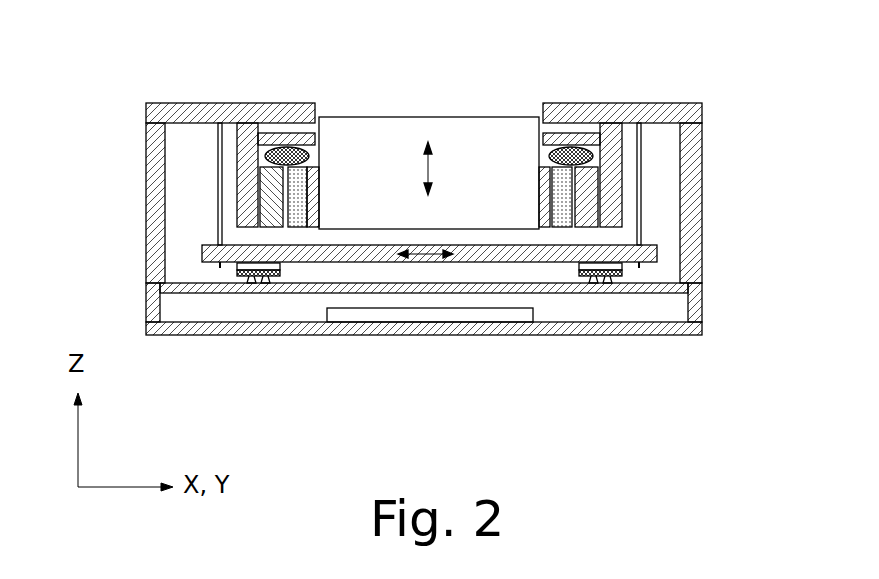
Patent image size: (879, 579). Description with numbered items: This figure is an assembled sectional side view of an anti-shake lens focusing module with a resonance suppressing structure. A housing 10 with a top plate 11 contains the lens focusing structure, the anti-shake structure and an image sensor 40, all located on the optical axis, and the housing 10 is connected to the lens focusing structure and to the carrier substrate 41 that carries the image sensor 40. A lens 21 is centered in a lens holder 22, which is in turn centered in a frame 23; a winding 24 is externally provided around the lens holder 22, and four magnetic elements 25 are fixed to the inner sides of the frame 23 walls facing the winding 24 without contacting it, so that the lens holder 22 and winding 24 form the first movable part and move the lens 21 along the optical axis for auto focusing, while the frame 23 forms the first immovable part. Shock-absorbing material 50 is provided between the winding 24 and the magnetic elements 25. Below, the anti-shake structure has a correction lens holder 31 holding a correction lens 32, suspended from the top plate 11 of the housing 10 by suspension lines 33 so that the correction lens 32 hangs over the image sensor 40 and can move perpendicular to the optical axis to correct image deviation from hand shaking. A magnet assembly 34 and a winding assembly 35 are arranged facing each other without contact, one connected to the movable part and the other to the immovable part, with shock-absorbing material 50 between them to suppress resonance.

The housing 10 is at (150, 103).
The top plate 11 is at (225, 103).
The lens 21 is at (400, 117).
The lens holder 22 is at (322, 167).
The frame 23 is at (260, 190).
The winding 24 is at (322, 202).
The magnetic elements 25 is at (290, 218).
The correction lens holder 31 is at (300, 293).
The correction lens 32 is at (378, 262).
The suspension lines 33 is at (216, 168).
The magnet assembly 34 is at (222, 268).
The winding assembly 35 is at (245, 283).
The image sensor 40 is at (503, 322).
The carrier substrate 41 is at (432, 335).
The shock-absorbing material 50 is at (285, 133).